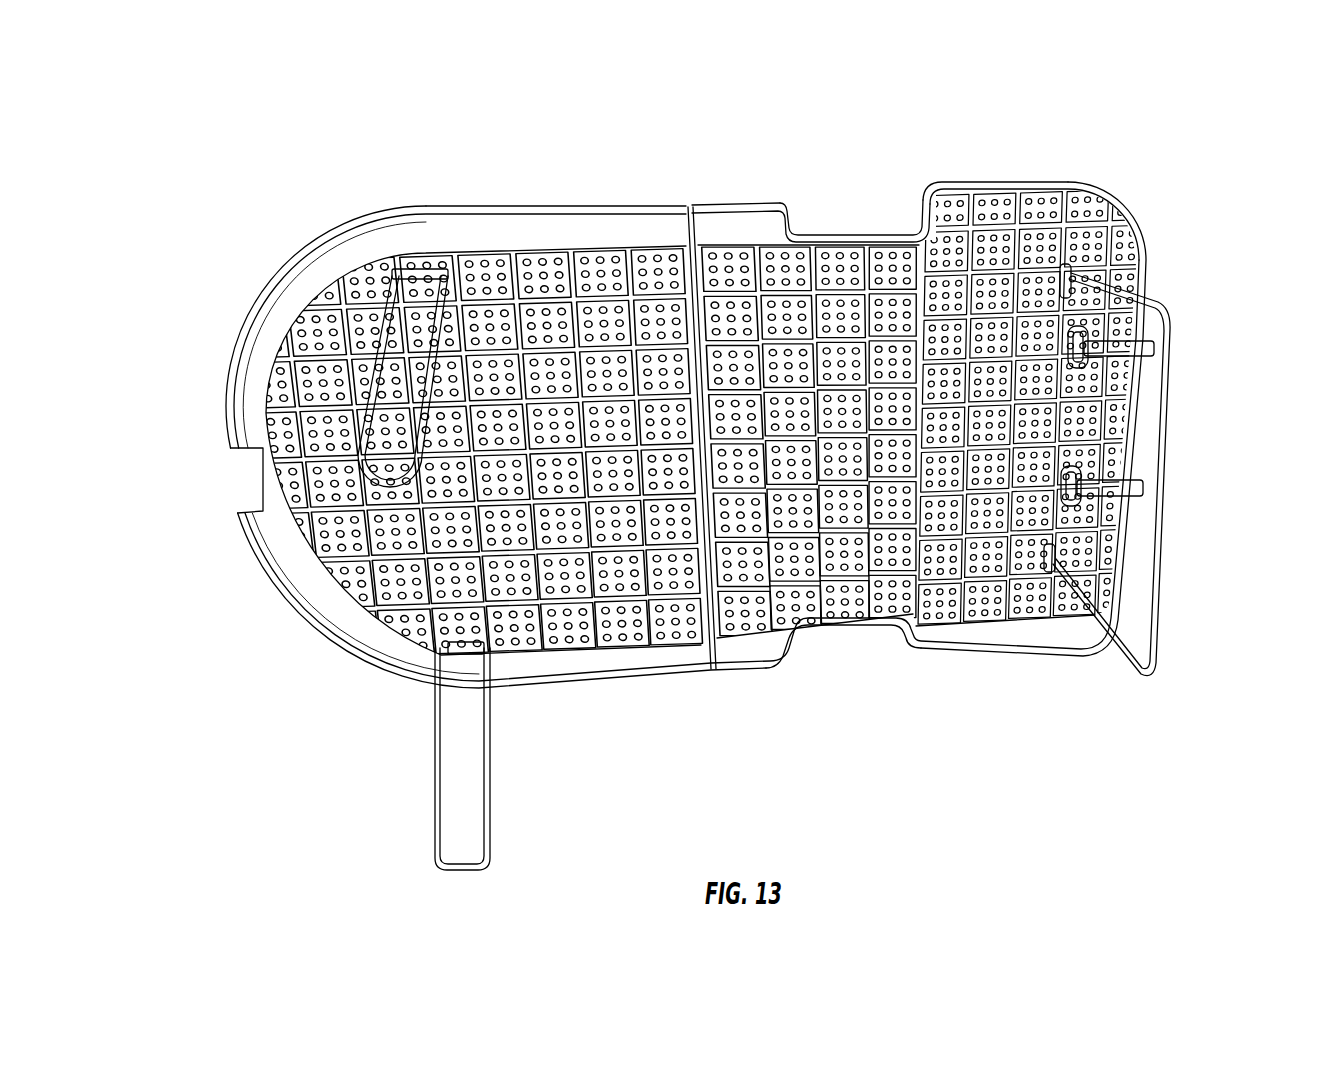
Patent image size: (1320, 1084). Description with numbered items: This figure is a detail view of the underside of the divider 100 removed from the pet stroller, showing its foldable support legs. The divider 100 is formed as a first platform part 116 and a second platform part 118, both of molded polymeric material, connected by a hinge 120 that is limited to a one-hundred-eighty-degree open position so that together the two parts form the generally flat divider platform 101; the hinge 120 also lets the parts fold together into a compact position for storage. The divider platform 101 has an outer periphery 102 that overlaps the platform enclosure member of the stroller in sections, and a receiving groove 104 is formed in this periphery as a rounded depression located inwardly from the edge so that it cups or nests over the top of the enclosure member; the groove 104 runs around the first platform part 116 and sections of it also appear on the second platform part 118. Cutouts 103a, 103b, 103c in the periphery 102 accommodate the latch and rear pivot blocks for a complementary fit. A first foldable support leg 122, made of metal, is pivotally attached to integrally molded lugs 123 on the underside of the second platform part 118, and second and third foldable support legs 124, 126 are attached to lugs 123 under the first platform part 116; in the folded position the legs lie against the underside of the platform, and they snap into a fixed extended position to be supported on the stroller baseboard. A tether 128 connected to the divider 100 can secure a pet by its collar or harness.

The divider 100 is at (1192, 553).
The divider platform 101 is at (1005, 617).
The outer periphery 102 is at (600, 671).
The cutout 103a is at (236, 469).
The cutout 103b is at (840, 649).
The cutout 103c is at (840, 196).
The receiving groove 104 is at (735, 210).
The first platform part 116 is at (590, 202).
The second platform part 118 is at (1005, 172).
The hinge 120 is at (683, 210).
The first foldable support leg 122 is at (1148, 667).
The lugs 123 is at (405, 266).
The second foldable support leg 124 is at (352, 347).
The third foldable support leg 126 is at (428, 830).
The tether 128 is at (1138, 480).